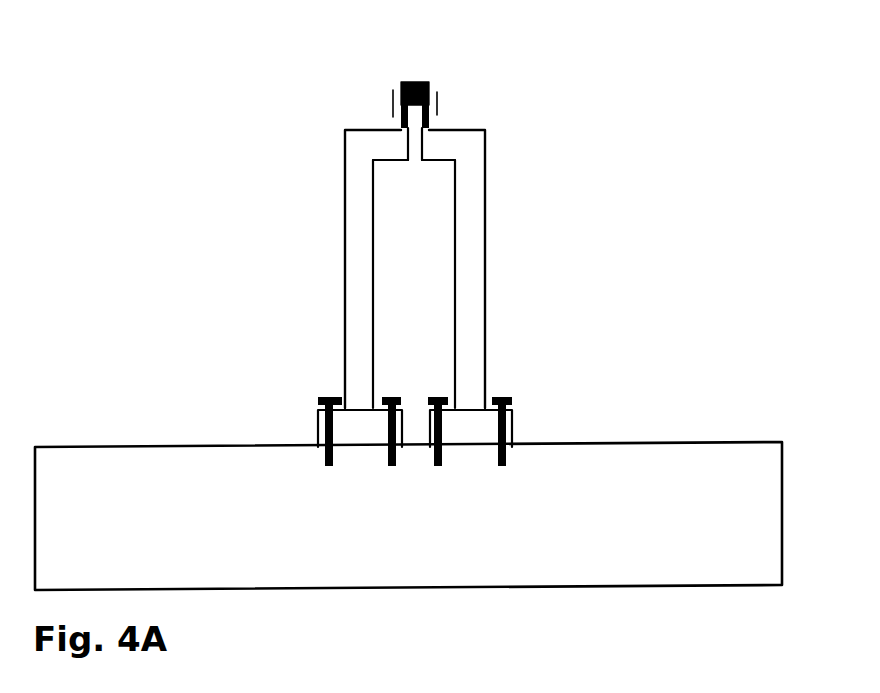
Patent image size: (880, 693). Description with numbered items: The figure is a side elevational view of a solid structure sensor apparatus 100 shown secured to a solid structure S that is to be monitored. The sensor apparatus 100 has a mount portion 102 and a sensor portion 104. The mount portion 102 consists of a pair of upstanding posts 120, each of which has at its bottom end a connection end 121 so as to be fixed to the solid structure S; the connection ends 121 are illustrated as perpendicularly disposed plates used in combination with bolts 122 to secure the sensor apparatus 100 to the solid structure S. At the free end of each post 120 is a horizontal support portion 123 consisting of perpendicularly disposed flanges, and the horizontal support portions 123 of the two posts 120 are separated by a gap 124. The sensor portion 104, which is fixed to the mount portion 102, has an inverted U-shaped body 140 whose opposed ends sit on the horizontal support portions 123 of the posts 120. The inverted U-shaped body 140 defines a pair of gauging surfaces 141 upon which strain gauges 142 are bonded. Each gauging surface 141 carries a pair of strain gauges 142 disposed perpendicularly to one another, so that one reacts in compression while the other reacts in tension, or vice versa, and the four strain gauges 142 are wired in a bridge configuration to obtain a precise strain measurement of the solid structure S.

The solid structure S is at (104, 465).
The solid structure sensor apparatus 100 is at (266, 228).
The mount portion 102 is at (331, 285).
The sensor portion 104 is at (392, 76).
The upstanding posts 120 is at (465, 328).
The connection ends 121 is at (415, 428).
The bolts 122 is at (387, 466).
The horizontal support portions 123 is at (385, 153).
The gap 124 is at (418, 147).
The inverted U-shaped body 140 is at (426, 82).
The gauging surfaces 141 is at (402, 123).
The strain gauges 142 is at (393, 100).